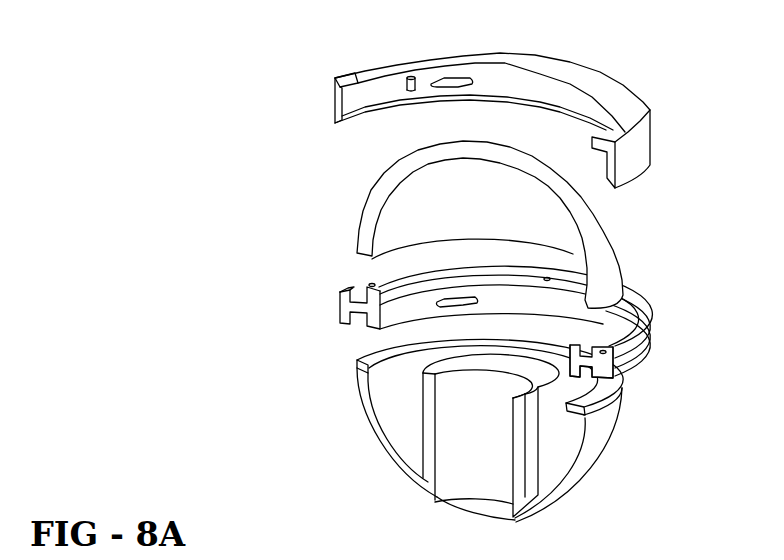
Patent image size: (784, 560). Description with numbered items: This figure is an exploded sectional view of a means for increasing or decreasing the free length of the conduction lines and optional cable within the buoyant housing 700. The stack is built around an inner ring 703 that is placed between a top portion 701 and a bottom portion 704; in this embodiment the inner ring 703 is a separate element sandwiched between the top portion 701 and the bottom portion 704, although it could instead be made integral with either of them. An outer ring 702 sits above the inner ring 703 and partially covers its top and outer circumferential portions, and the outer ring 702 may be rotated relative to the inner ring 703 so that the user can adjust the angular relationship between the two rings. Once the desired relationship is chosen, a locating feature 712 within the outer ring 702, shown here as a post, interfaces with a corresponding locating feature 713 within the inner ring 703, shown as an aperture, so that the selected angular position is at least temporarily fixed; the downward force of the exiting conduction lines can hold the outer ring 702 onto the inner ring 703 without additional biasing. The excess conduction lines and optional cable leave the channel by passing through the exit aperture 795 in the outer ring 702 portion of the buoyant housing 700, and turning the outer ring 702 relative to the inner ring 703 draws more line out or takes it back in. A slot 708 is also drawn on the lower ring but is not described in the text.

The buoyant housing 700 is at (220, 43).
The outer ring 702 is at (333, 86).
The locating feature 712 is at (405, 90).
The exit aperture 795 is at (474, 80).
The top portion 701 is at (374, 182).
The locating feature 713 is at (365, 286).
The inner ring 703 is at (345, 305).
The slot 708 is at (468, 298).
The bottom portion 704 is at (358, 385).